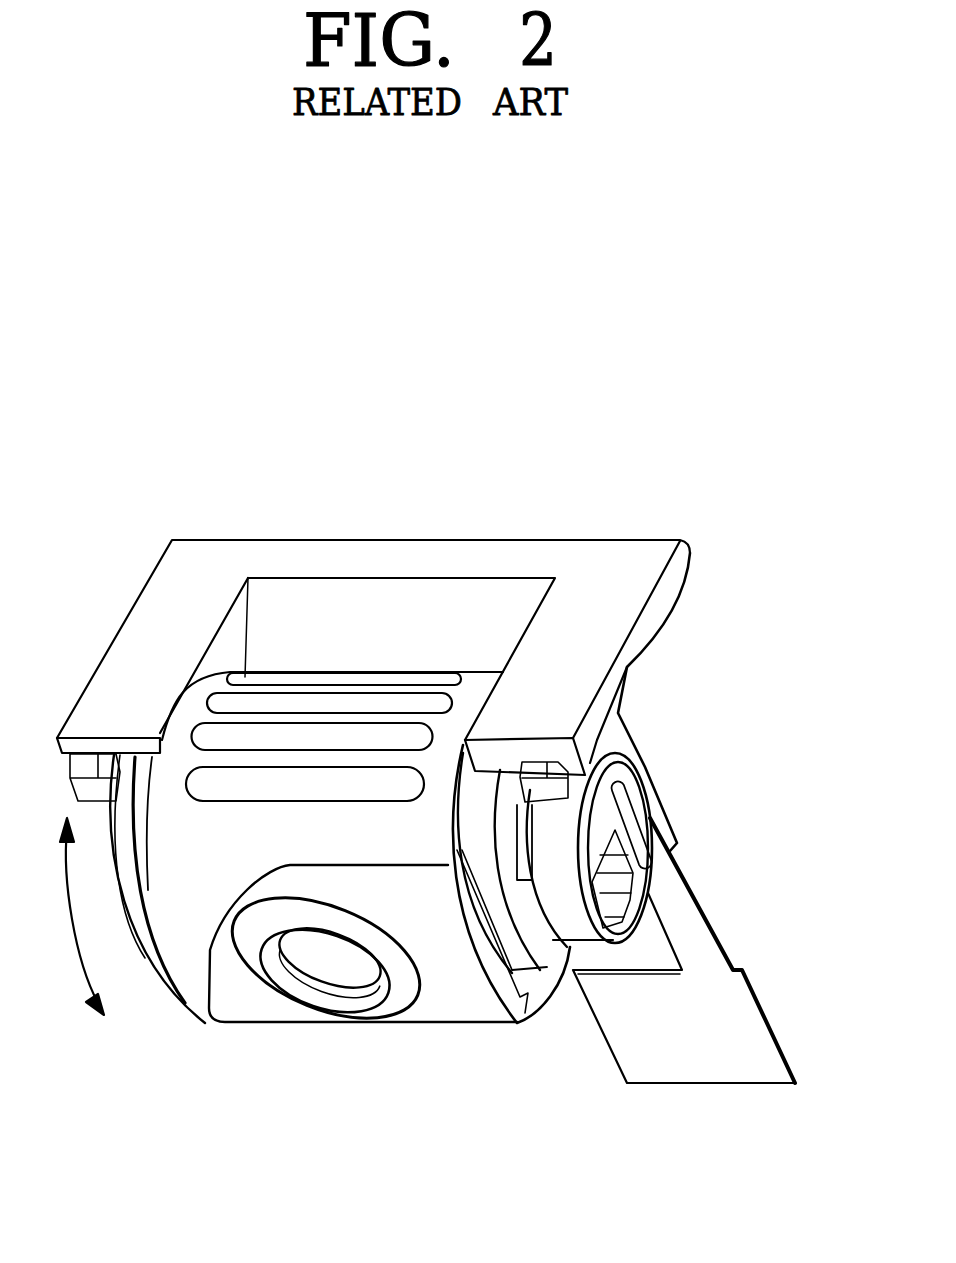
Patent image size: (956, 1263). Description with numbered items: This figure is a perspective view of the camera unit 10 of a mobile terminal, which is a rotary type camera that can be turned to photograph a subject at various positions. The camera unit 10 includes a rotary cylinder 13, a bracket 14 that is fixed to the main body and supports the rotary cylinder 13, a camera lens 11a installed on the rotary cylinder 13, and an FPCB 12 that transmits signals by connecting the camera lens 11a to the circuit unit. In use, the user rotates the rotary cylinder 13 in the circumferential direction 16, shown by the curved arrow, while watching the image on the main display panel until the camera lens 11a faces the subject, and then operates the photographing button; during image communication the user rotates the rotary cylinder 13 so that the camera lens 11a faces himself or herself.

The camera unit 10 is at (198, 393).
The camera lens 11a is at (333, 968).
The FPCB 12 is at (698, 1063).
The rotary cylinder 13 is at (177, 908).
The bracket 14 is at (366, 568).
The circumferential direction 16 is at (66, 916).